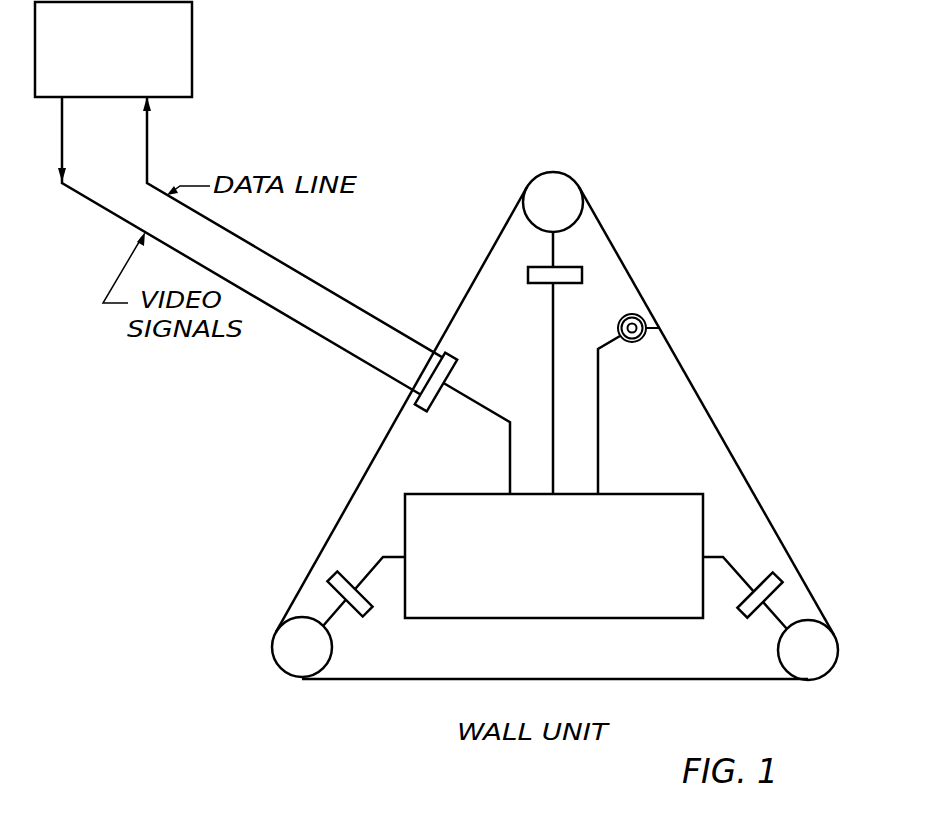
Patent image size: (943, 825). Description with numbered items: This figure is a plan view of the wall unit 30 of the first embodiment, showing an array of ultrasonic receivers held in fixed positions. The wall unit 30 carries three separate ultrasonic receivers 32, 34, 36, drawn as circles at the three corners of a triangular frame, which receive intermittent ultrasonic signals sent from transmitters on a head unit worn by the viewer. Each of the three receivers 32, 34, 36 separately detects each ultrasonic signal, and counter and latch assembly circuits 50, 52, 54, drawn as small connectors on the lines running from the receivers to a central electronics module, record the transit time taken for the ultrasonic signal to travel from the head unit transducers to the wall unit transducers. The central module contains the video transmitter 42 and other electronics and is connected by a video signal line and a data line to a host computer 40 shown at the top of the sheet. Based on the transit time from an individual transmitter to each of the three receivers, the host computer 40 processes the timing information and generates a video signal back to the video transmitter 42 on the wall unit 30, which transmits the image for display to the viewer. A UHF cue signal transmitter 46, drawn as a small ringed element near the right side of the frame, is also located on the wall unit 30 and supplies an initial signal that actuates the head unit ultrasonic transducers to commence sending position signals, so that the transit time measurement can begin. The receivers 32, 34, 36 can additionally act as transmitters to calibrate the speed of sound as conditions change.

The wall unit 30 is at (716, 305).
The ultrasonic receiver 32 is at (830, 642).
The ultrasonic receiver 34 is at (290, 630).
The ultrasonic receiver 36 is at (572, 190).
The host computer 40 is at (192, 42).
The video transmitter 42 is at (645, 494).
The UHF cue signal transmitter 46 is at (643, 318).
The counter and latch assembly circuit 50 is at (363, 617).
The counter and latch assembly circuit 52 is at (787, 576).
The counter and latch assembly circuit 54 is at (583, 276).